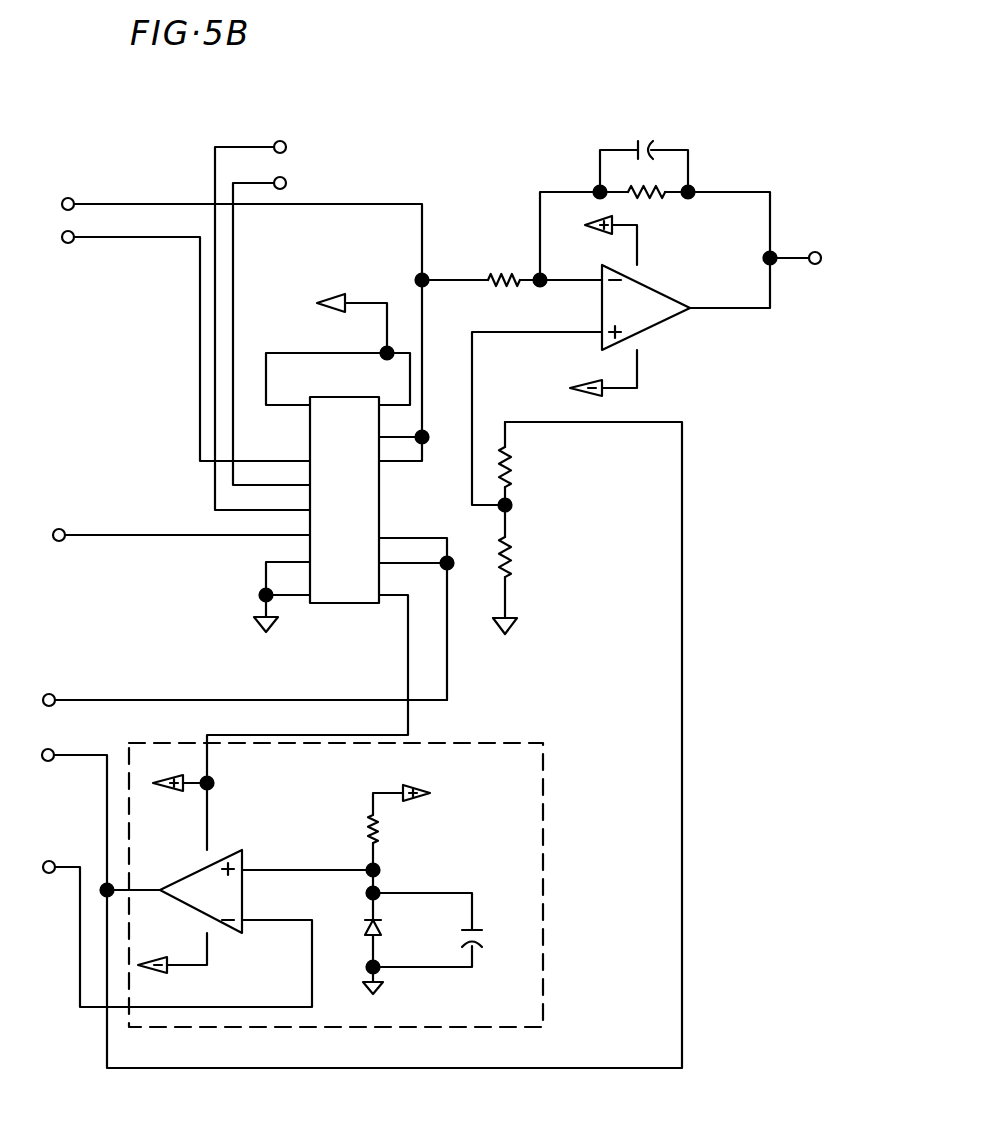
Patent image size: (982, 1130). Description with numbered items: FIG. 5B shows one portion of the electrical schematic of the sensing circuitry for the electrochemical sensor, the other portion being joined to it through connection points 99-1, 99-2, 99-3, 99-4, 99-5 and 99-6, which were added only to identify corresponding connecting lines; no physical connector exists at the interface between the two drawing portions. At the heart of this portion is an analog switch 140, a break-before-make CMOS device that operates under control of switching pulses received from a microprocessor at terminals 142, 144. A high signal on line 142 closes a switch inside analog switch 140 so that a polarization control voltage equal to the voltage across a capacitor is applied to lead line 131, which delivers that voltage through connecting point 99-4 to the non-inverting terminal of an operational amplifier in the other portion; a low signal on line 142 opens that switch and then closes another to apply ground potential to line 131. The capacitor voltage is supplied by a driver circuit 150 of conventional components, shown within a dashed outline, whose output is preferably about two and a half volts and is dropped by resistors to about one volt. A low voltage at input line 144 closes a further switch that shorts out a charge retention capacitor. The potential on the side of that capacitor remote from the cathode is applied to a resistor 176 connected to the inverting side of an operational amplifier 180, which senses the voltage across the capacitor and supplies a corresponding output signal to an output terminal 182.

The connection point 99-1 is at (72, 197).
The connection point 99-2 is at (75, 233).
The connection point 99-3 is at (65, 530).
The connection point 99-4 is at (55, 695).
The connection point 99-5 is at (53, 751).
The connection point 99-6 is at (48, 860).
The terminal 142 is at (258, 142).
The input line 144 is at (267, 178).
The resistor 176 is at (503, 277).
The operational amplifier 180 is at (663, 293).
The output terminal 182 is at (808, 252).
The analog switch 140 is at (390, 500).
The lead line 131 is at (447, 686).
The driver circuit 150 is at (543, 895).